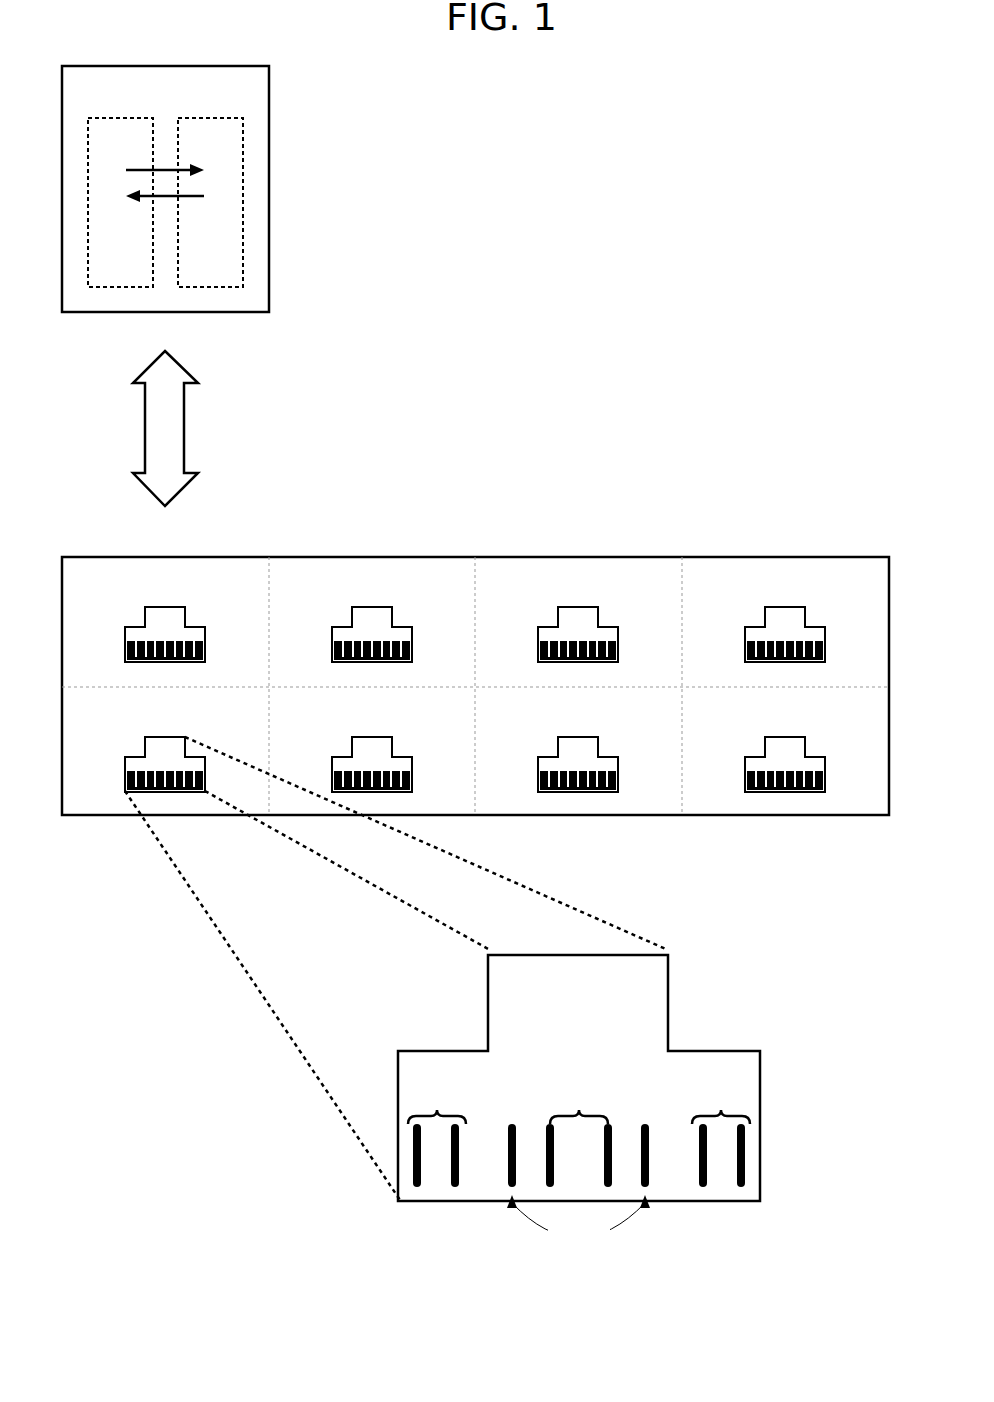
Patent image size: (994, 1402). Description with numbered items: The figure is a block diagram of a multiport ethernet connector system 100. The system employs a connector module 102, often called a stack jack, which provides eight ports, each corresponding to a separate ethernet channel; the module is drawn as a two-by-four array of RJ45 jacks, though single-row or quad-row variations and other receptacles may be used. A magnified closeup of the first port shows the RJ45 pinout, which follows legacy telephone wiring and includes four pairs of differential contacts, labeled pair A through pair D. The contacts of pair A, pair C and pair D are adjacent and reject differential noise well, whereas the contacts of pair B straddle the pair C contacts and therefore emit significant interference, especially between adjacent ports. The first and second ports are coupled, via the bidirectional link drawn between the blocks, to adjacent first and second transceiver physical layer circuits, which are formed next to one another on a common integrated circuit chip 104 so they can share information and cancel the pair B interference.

The multiport ethernet connector system 100 is at (733, 247).
The connector module 102 is at (721, 557).
The common integrated circuit chip 104 is at (269, 158).